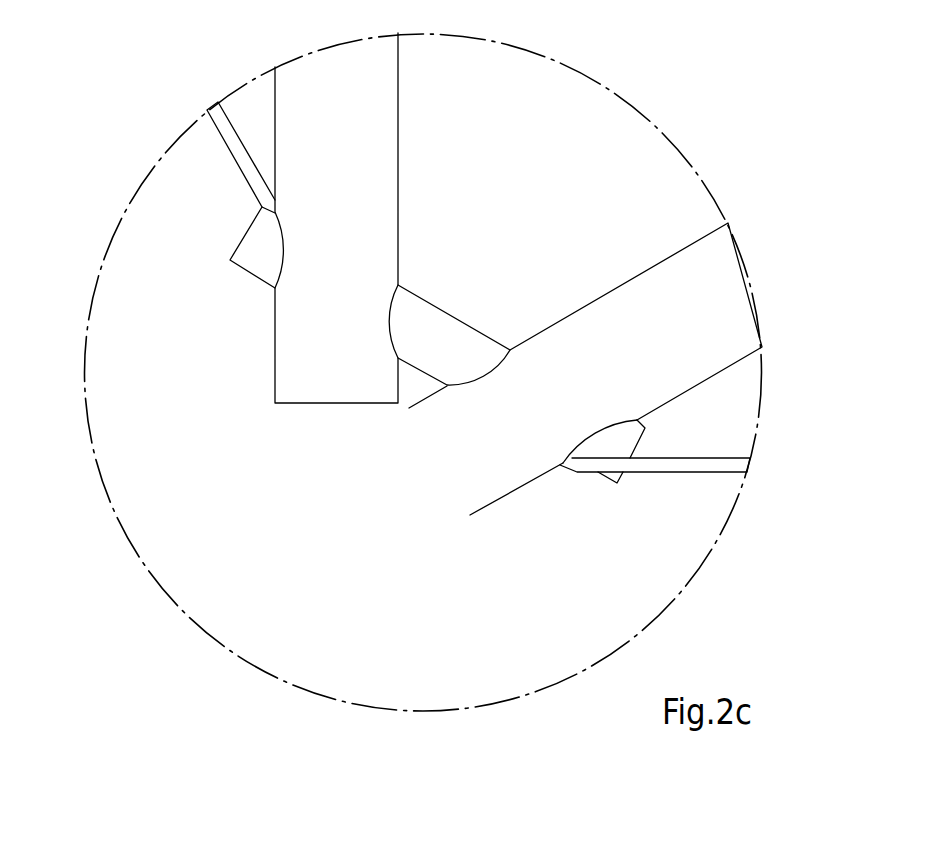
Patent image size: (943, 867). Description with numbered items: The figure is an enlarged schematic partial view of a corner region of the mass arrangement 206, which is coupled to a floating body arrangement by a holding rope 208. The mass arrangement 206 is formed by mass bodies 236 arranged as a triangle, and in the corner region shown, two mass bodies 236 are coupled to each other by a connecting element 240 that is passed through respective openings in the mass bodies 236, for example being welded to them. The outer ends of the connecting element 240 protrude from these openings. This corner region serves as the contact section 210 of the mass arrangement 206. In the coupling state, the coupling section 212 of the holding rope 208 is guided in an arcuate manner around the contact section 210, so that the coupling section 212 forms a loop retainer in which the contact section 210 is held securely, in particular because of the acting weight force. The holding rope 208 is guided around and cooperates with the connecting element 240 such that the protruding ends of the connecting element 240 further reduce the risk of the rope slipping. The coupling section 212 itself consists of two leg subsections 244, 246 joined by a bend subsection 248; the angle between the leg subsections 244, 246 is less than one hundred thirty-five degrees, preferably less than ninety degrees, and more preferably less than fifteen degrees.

The mass arrangement 206 is at (360, 580).
The holding rope 208 is at (238, 158).
The contact section 210 is at (522, 207).
The coupling section 212 is at (250, 306).
The mass body 236 is at (466, 290).
The connecting element 240 is at (451, 328).
The leg subsection 244 is at (648, 496).
The leg subsection 246 is at (229, 206).
The bend subsection 248 is at (375, 442).